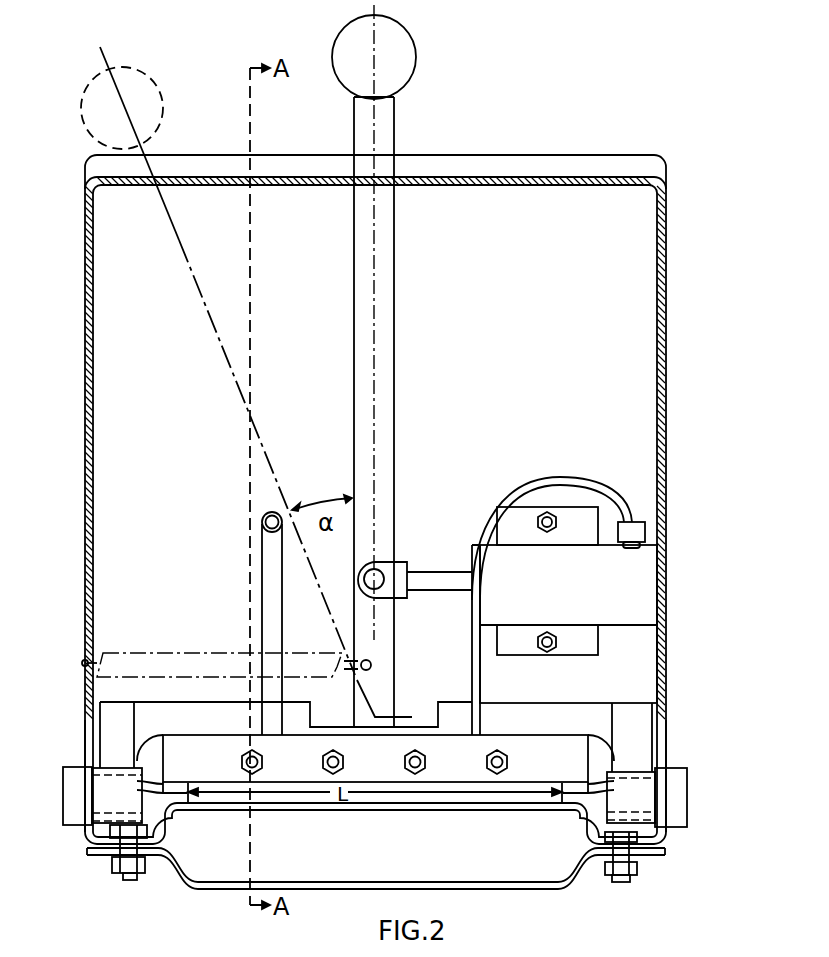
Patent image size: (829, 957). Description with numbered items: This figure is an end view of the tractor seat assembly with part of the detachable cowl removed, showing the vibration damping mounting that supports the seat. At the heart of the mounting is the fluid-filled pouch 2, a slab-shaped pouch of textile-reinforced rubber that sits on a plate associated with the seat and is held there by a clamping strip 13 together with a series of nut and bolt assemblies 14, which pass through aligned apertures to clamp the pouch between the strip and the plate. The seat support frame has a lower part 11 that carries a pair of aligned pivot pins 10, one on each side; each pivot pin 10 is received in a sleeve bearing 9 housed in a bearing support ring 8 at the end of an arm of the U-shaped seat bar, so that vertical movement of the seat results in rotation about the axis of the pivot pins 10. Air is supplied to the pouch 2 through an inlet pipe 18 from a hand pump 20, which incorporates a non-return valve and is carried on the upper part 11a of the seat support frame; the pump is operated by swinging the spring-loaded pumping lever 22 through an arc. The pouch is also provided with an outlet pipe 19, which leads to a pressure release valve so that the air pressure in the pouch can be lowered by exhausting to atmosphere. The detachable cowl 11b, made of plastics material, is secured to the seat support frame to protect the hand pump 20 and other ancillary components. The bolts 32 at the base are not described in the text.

The fluid-filled pouch 2 is at (222, 797).
The bearing support ring 8 is at (110, 775).
The sleeve bearing 9 is at (92, 768).
The pivot pin 10 is at (80, 795).
The lower part of seat support frame 11 is at (86, 720).
The upper part of seat support frame 11a is at (640, 388).
The detachable cowl 11b is at (85, 492).
The clamping strip 13 is at (218, 748).
The nut and bolt assemblies 14 is at (446, 766).
The inlet pipe 18 is at (480, 693).
The outlet pipe 19 is at (268, 580).
The hand pump 20 is at (590, 613).
The pumping lever 22 is at (355, 403).
The bolt 32 is at (140, 870).